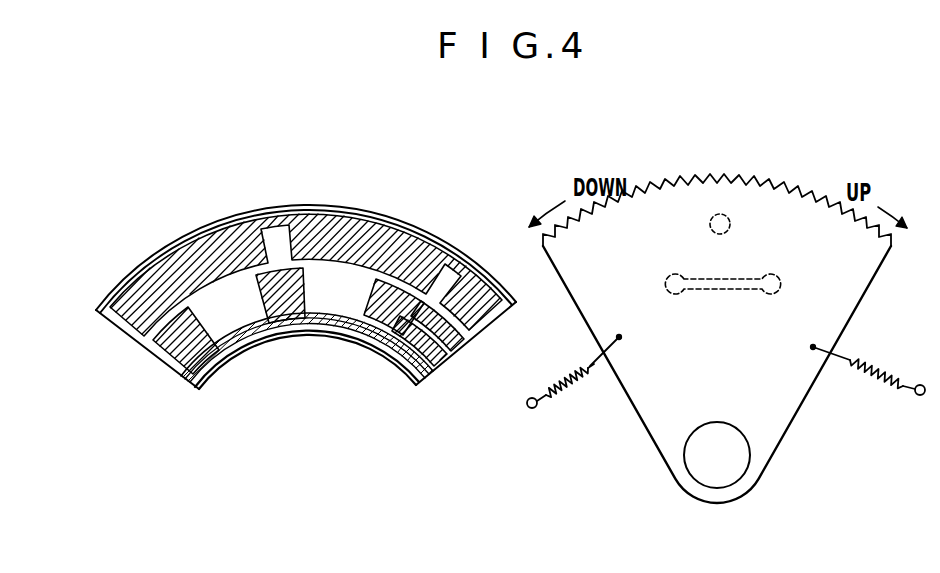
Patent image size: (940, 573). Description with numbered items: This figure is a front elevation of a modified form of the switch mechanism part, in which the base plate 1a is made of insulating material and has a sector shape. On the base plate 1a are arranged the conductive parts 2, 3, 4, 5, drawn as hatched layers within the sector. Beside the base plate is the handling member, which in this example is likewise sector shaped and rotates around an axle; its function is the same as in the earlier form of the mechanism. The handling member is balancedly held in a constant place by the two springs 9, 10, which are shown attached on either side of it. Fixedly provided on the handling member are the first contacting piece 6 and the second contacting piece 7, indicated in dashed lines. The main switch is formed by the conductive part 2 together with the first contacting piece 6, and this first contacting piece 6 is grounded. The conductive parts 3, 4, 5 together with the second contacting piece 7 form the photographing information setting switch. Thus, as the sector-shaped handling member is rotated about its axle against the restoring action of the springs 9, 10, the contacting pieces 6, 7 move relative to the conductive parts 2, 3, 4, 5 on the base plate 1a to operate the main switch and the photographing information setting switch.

The base plate 1a is at (397, 228).
The conductive part 2 is at (497, 313).
The conductive part 3 is at (460, 340).
The conductive part 4 is at (445, 362).
The conductive part 5 is at (420, 378).
The first contacting piece 6 is at (731, 223).
The second contacting piece 7 is at (727, 280).
The spring 9 is at (872, 383).
The spring 10 is at (574, 380).